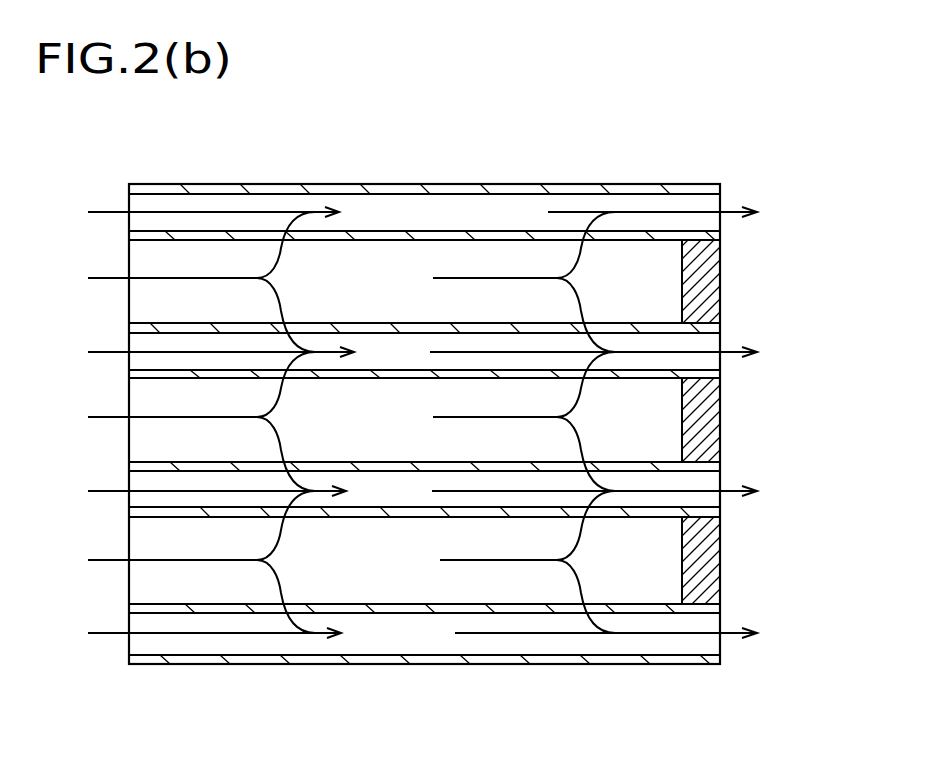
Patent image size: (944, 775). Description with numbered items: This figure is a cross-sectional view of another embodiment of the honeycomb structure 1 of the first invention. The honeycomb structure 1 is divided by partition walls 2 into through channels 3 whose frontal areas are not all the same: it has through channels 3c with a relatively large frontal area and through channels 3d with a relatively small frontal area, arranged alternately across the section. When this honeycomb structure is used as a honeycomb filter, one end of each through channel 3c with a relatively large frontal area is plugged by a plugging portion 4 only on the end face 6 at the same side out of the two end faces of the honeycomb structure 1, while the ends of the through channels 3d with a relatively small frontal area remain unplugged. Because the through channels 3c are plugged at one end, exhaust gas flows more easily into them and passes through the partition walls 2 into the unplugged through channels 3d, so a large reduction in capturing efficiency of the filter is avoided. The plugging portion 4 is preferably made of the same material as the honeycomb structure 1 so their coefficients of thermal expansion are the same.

The honeycomb structure 1 is at (641, 169).
The partition wall 2 is at (527, 233).
The through channels 3 is at (492, 125).
The through channels with a relatively large frontal area 3c is at (388, 267).
The through channels with a relatively small frontal area 3d is at (465, 208).
The plugging portion 4 is at (707, 277).
The end face 6 is at (721, 358).